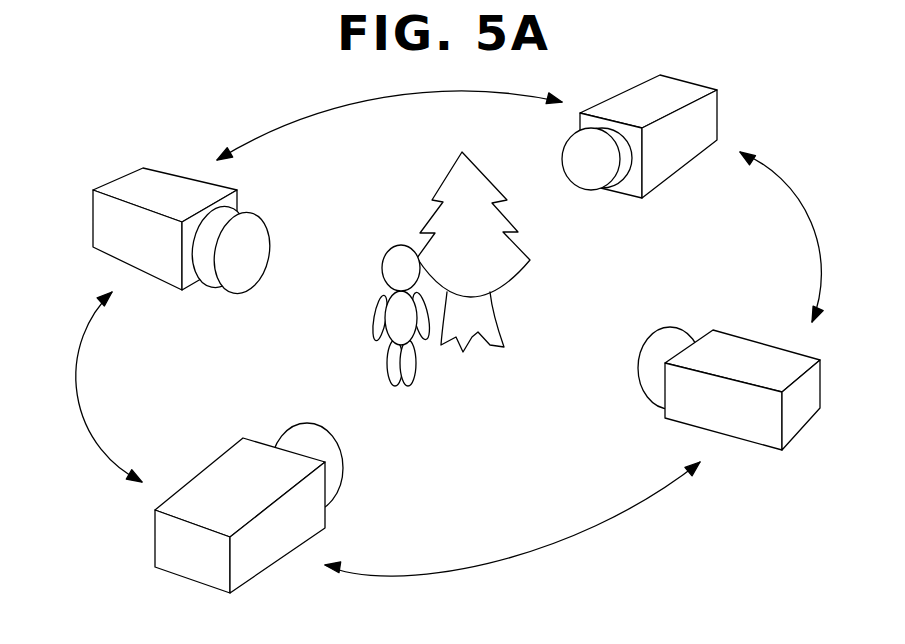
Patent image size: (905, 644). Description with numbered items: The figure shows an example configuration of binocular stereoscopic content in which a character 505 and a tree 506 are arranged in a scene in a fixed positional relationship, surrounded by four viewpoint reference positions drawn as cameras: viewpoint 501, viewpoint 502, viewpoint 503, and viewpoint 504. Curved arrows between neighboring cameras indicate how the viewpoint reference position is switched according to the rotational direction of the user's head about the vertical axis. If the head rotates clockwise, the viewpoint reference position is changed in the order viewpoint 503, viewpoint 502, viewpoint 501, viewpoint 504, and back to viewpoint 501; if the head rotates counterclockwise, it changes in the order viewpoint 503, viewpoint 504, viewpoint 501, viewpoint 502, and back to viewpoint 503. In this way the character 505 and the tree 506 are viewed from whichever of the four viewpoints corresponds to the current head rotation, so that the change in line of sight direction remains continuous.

The viewpoint 501 is at (717, 93).
The viewpoint 502 is at (820, 377).
The viewpoint 503 is at (173, 557).
The viewpoint 504 is at (98, 230).
The character 505 is at (383, 260).
The tree 506 is at (517, 253).